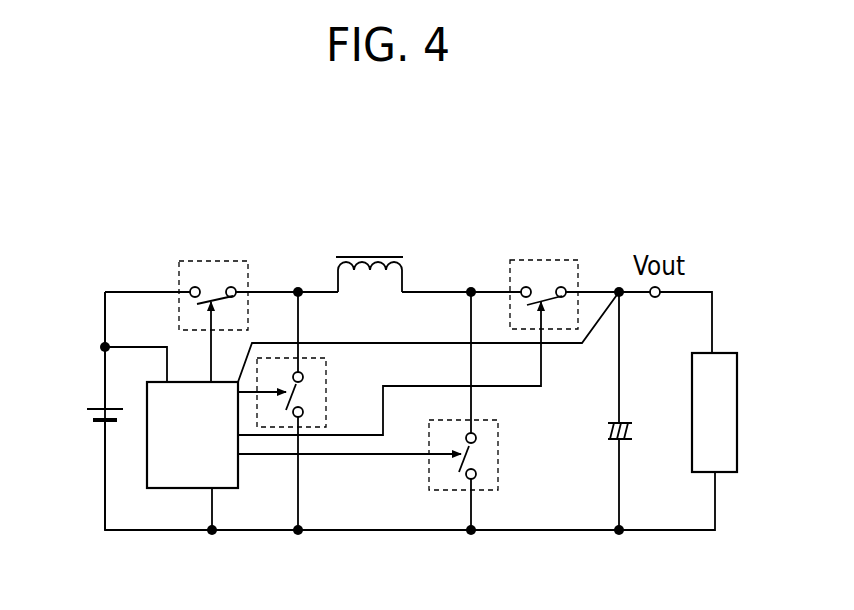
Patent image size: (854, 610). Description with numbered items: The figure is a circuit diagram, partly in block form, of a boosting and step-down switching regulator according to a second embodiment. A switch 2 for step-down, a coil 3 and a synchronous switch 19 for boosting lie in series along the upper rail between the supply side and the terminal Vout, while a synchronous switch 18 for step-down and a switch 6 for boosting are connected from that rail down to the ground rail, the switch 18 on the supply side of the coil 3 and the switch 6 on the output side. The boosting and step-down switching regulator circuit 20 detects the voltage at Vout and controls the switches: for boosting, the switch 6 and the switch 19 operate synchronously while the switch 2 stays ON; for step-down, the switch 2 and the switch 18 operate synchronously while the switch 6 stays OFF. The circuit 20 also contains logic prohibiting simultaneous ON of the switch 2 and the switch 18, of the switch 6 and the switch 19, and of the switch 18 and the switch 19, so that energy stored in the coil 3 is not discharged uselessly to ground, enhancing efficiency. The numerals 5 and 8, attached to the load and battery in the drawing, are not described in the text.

The switch for step-down 2 is at (252, 267).
The coil 3 is at (402, 270).
The load 5 is at (727, 353).
The switch for boosting 6 is at (487, 492).
The battery 8 is at (98, 422).
The synchronous switch for step-down 18 is at (326, 395).
The synchronous switch for boosting 19 is at (545, 260).
The boosting and step-down switching regulator circuit 20 is at (225, 488).